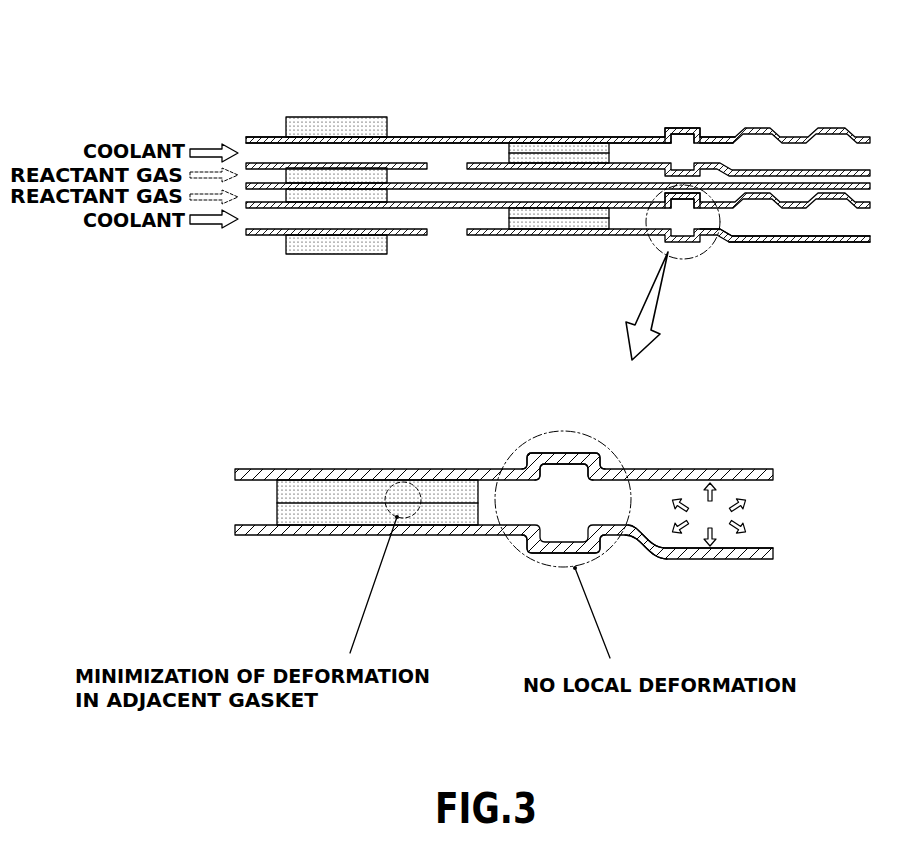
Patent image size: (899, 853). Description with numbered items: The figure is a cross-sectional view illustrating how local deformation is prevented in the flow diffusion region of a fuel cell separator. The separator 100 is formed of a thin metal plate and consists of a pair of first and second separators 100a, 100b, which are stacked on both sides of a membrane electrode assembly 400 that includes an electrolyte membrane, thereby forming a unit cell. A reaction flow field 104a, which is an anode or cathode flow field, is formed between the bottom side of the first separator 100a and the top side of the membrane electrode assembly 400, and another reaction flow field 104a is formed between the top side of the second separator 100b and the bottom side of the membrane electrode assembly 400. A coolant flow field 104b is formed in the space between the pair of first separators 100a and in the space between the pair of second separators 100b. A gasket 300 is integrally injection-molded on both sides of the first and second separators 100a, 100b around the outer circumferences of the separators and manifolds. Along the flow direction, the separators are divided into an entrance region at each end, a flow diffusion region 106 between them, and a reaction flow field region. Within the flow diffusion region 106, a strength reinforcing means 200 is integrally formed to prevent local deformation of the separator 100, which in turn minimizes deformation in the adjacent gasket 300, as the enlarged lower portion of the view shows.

The separator 100 is at (483, 135).
The first separator 100a is at (505, 135).
The second separator 100b is at (650, 173).
The reaction flow field 104a is at (667, 133).
The coolant flow field 104b is at (712, 137).
The flow diffusion region 106 is at (577, 430).
The strength reinforcing means 200 is at (550, 558).
The gasket 300 is at (587, 155).
The membrane electrode assembly 400 is at (442, 174).